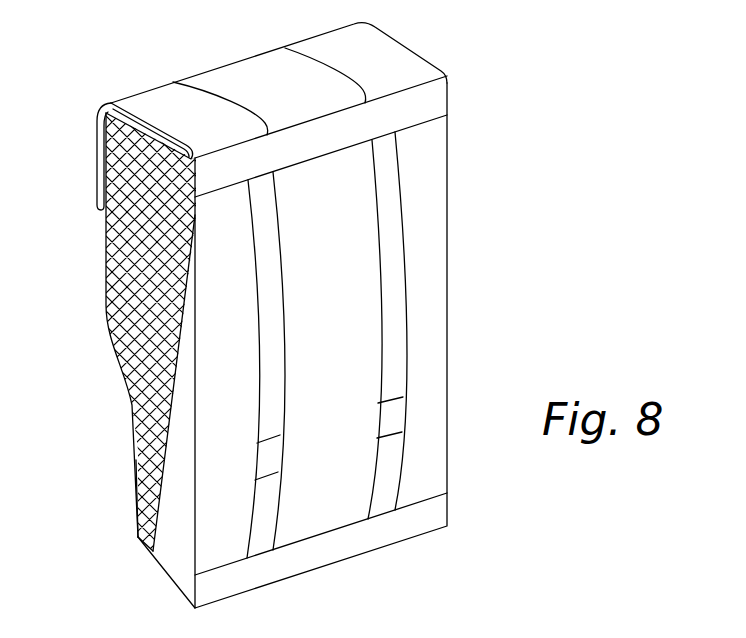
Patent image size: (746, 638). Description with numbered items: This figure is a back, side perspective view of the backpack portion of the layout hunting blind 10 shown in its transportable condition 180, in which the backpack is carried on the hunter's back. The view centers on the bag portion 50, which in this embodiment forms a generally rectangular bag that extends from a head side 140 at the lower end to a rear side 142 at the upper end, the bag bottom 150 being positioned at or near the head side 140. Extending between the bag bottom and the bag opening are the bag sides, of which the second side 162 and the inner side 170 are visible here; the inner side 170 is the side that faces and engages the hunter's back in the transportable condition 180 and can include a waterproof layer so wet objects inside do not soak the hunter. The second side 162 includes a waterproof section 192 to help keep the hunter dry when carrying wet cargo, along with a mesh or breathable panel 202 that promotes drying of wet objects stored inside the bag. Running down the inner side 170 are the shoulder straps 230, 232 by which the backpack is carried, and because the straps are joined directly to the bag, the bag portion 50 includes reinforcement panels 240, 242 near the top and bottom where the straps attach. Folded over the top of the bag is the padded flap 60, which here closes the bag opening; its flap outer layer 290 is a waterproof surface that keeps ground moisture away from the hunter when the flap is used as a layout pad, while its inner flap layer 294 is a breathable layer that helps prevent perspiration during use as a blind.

The layout hunting blind 10 is at (615, 148).
The bag portion 50 is at (105, 422).
The padded flap 60 is at (133, 88).
The head side 140 is at (180, 590).
The rear side 142 is at (187, 102).
The bag bottom 150 is at (153, 553).
The second side 162 is at (153, 323).
The inner side 170 is at (332, 362).
The transportable condition 180 is at (543, 232).
The waterproof section 192 is at (175, 515).
The mesh or breathable panel 202 is at (106, 268).
The shoulder strap 230 is at (390, 308).
The shoulder strap 232 is at (270, 273).
The reinforcement panel 240 is at (433, 105).
The reinforcement panel 242 is at (322, 552).
The flap outer layer 290 is at (402, 53).
The inner flap layer 294 is at (107, 175).